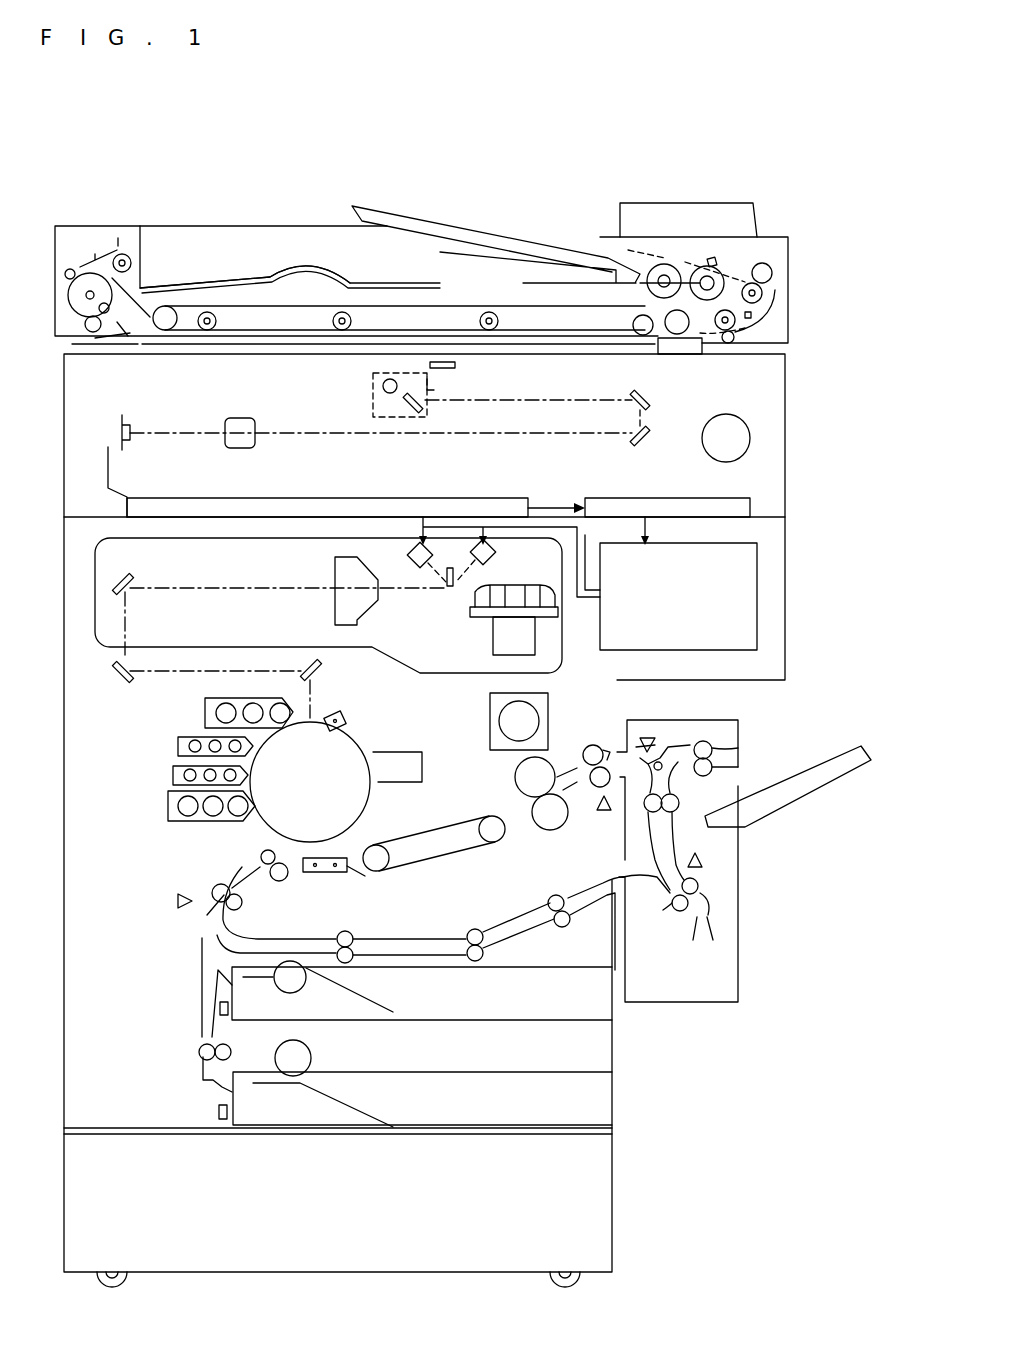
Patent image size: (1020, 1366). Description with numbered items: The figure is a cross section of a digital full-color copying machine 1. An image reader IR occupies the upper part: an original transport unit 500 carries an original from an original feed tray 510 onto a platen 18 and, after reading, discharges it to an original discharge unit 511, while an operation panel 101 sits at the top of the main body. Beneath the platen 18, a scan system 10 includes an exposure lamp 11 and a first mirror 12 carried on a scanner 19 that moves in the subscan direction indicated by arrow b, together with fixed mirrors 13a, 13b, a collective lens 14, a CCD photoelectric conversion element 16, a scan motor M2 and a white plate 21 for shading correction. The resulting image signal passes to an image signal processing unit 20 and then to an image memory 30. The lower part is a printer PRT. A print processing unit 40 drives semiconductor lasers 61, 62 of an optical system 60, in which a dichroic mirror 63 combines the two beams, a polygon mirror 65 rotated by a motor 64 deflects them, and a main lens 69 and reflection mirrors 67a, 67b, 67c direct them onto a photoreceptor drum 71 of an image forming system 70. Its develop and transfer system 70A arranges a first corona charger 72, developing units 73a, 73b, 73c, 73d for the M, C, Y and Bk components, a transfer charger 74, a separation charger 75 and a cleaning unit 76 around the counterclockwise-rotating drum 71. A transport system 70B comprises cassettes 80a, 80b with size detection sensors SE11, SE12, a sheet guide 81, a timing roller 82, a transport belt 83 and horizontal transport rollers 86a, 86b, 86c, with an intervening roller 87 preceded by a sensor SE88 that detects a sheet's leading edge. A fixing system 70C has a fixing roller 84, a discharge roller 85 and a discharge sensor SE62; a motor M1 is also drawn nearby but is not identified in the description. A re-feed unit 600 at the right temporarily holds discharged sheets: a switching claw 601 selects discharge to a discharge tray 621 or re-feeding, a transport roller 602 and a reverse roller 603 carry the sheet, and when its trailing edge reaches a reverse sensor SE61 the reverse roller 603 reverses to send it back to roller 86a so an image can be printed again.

The copying machine 1 is at (396, 106).
The original transport unit 500 is at (263, 228).
The original discharge unit 511 is at (217, 280).
The original feed tray 510 is at (432, 215).
The operation panel 101 is at (686, 187).
The image reader IR is at (800, 458).
The platen 18 is at (541, 352).
The photoelectric conversion element 16 is at (128, 422).
The collective lens 14 is at (227, 441).
The arrow indicating subscan direction b is at (247, 382).
The scan system 10 is at (362, 405).
The exposure lamp 11 is at (383, 388).
The first mirror 12 is at (422, 405).
The scanner 19 is at (437, 388).
The white plate 21 is at (455, 366).
The fixed mirror 13a is at (650, 395).
The fixed mirror 13b is at (648, 440).
The scan motor M2 is at (726, 438).
The image signal processing unit 20 is at (418, 497).
The image memory 30 is at (623, 500).
The optical system 60 is at (252, 560).
The reflection mirror 67a is at (132, 578).
The reflection mirror 67b is at (113, 668).
The reflection mirror 67c is at (320, 668).
The main lens 69 is at (340, 574).
The semiconductor laser 62 is at (410, 555).
The semiconductor laser 61 is at (493, 558).
The dichroic mirror 63 is at (444, 584).
The polygon mirror 65 is at (510, 621).
The motor 64 is at (528, 640).
The print processing unit 40 is at (742, 580).
The image forming system 70 is at (424, 739).
The photoreceptor drum 71 is at (272, 777).
The first corona charger 72 is at (345, 716).
The develop and transfer system 70A is at (152, 717).
The developing unit 73a is at (205, 710).
The developing unit 73b is at (178, 748).
The developing unit 73c is at (173, 777).
The developing unit 73d is at (170, 822).
The cleaning unit 76 is at (422, 762).
The transport belt 83 is at (418, 838).
The fixing system 70C is at (480, 810).
The transfer charger 74 is at (320, 874).
The separation charger 75 is at (347, 872).
The timing roller 82 is at (262, 856).
The intervening roller 87 is at (215, 897).
The sensor SE88 is at (176, 905).
The horizontal transport roller 86c is at (340, 934).
The transport system 70B is at (447, 939).
The horizontal transport roller 86b is at (470, 930).
The horizontal transport roller 86a is at (548, 902).
The main motor M1 is at (519, 721).
The fixing roller 84 is at (545, 822).
The discharge roller 85 is at (592, 746).
The discharge sensor SE62 is at (604, 812).
The printer PRT is at (782, 708).
The re-feed unit 600 is at (741, 946).
The switching claw 601 is at (667, 745).
The transport roller 602 is at (684, 797).
The discharge tray 621 is at (828, 775).
The reverse sensor SE61 is at (702, 862).
The reverse roller 603 is at (673, 917).
The sheet guide 81 is at (200, 960).
The size detection sensor SE11 is at (218, 1009).
The size detection sensor SE12 is at (217, 1110).
The cassette 80a is at (568, 978).
The cassette 80b is at (518, 1092).